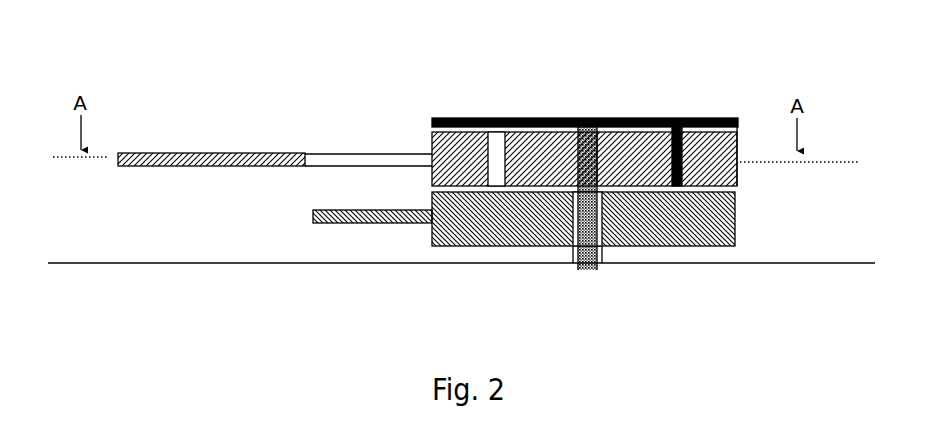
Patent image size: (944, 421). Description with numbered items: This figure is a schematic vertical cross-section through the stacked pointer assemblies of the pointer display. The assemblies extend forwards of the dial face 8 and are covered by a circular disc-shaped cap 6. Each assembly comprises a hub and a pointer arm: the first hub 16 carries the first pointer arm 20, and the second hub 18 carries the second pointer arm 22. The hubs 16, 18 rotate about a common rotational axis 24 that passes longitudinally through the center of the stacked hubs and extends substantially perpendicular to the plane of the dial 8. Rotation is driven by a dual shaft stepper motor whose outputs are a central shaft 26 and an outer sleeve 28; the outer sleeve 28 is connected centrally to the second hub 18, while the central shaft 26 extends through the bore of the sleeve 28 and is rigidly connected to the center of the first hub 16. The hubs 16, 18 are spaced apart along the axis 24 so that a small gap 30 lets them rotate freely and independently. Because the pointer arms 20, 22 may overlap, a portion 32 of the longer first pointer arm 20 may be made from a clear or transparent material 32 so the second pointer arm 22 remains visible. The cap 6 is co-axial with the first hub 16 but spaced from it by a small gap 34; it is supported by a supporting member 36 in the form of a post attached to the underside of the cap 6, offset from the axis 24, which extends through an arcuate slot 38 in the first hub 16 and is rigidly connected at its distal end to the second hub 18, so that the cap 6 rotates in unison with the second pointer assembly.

The cap 6 is at (482, 117).
The dial face 8 is at (170, 263).
The first hub 16 is at (727, 172).
The second hub 18 is at (720, 228).
The first pointer arm 20 is at (238, 153).
The second pointer arm 22 is at (323, 223).
The rotational axis 24 is at (587, 118).
The central shaft 26 is at (608, 118).
The outer sleeve 28 is at (576, 262).
The gap 30 is at (730, 190).
The clear or transparent material portion 32 is at (362, 157).
The gap 34 is at (738, 130).
The supporting member 36 is at (660, 118).
The slot 38 is at (513, 117).